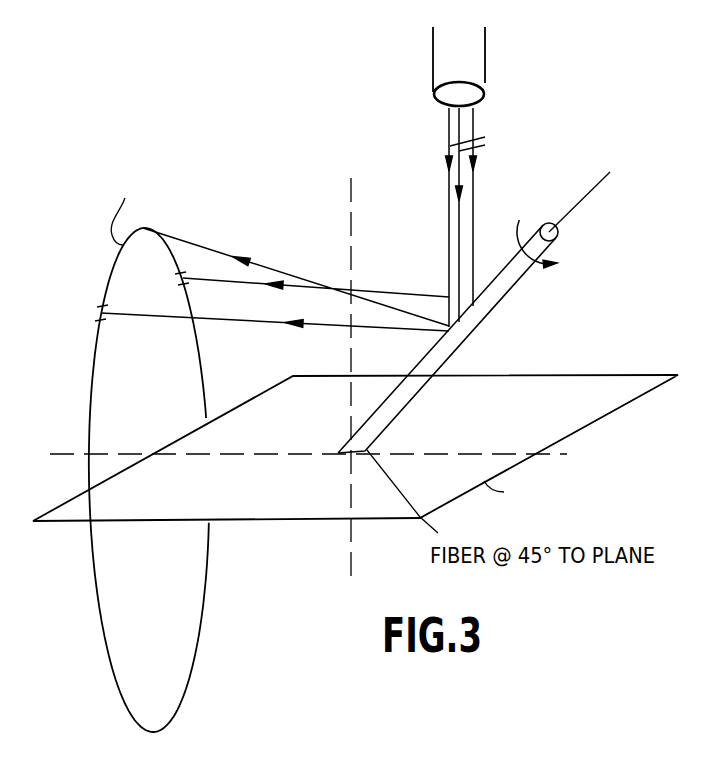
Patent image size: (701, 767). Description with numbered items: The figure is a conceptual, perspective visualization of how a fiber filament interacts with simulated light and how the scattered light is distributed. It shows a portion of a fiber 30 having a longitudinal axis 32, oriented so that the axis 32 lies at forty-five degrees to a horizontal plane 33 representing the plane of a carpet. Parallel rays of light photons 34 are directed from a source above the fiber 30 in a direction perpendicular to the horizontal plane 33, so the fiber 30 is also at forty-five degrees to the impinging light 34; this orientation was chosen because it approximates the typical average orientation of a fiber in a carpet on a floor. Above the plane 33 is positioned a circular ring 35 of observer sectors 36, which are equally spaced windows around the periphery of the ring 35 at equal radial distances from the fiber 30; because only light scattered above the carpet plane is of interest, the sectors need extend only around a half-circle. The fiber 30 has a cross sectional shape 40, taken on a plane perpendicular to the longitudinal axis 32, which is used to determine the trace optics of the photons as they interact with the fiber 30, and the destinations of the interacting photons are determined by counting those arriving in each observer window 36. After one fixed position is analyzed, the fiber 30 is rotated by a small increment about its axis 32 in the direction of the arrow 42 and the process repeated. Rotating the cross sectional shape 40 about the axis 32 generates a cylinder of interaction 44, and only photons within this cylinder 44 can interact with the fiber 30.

The fiber 30 is at (478, 333).
The longitudinal axis 32 is at (611, 171).
The horizontal plane 33 is at (567, 453).
The parallel rays of light photons 34 is at (476, 178).
The circular ring 35 is at (95, 349).
The observer sectors 36 is at (100, 307).
The cross sectional shape 40 is at (557, 236).
The arrow 42 is at (560, 266).
The cylinder of interaction 44 is at (465, 70).